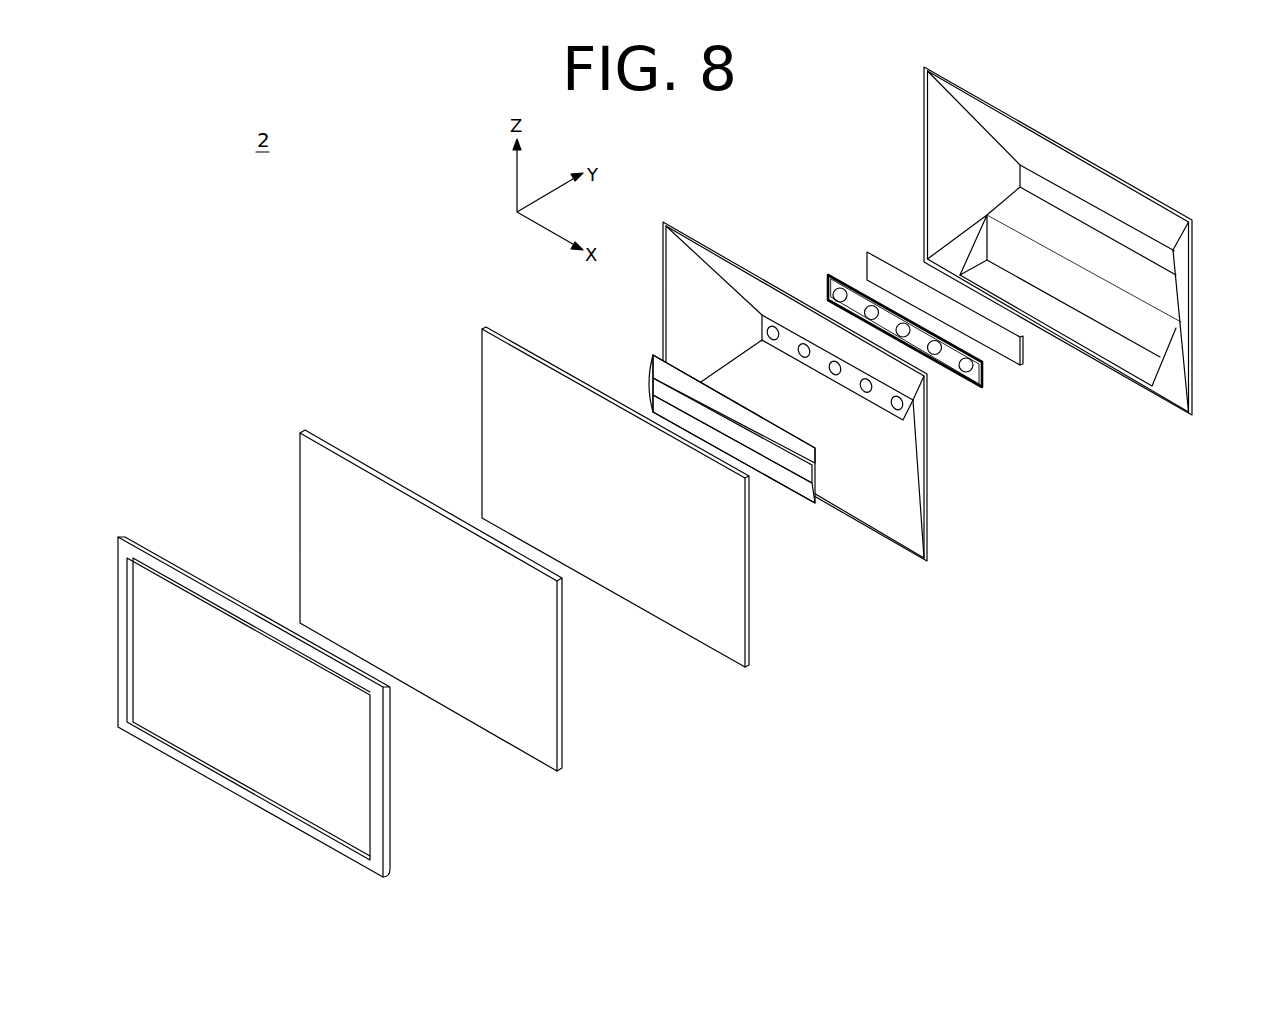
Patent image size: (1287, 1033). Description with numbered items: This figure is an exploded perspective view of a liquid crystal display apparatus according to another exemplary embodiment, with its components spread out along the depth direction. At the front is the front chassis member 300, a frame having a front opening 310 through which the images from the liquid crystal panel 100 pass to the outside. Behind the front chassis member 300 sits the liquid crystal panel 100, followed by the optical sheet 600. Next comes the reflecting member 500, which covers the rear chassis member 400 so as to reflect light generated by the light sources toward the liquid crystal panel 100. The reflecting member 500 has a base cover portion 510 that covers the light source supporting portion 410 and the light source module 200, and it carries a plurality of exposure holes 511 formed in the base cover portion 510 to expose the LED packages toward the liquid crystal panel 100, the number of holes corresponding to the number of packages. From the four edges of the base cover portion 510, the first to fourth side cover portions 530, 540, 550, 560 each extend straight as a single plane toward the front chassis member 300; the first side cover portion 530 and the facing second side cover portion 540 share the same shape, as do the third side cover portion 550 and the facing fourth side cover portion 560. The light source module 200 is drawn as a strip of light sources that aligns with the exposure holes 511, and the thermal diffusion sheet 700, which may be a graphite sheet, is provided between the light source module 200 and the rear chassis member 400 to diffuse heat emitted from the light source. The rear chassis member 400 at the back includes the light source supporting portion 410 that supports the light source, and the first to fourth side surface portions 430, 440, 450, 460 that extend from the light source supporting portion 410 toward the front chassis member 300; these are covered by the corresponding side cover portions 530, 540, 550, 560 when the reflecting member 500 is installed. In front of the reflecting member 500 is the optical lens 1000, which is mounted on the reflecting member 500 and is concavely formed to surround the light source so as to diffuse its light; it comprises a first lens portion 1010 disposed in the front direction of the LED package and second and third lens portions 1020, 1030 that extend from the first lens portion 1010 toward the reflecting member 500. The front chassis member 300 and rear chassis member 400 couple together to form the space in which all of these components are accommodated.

The liquid crystal panel 100 is at (332, 434).
The light source module 200 is at (830, 271).
The front chassis member 300 is at (254, 677).
The front opening 310 is at (257, 698).
The rear chassis member 400 is at (1059, 231).
The light source supporting portion 410 is at (1172, 252).
The first side surface portion 430 is at (1108, 275).
The second side surface portion 440 is at (1108, 188).
The third side surface portion 450 is at (938, 167).
The fourth side surface portion 460 is at (1182, 307).
The reflecting member 500 is at (799, 368).
The base cover portion 510 is at (876, 345).
The exposure holes 511 is at (838, 355).
The first side cover portion 530 is at (882, 522).
The second side cover portion 540 is at (743, 283).
The third side cover portion 550 is at (667, 305).
The fourth side cover portion 560 is at (925, 448).
The optical sheet 600 is at (526, 333).
The thermal diffusion sheet 700 is at (877, 246).
The optical lens 1000 is at (706, 444).
The first lens portion 1010 is at (643, 378).
The second lens portion 1020 is at (815, 455).
The third lens portion 1030 is at (760, 470).